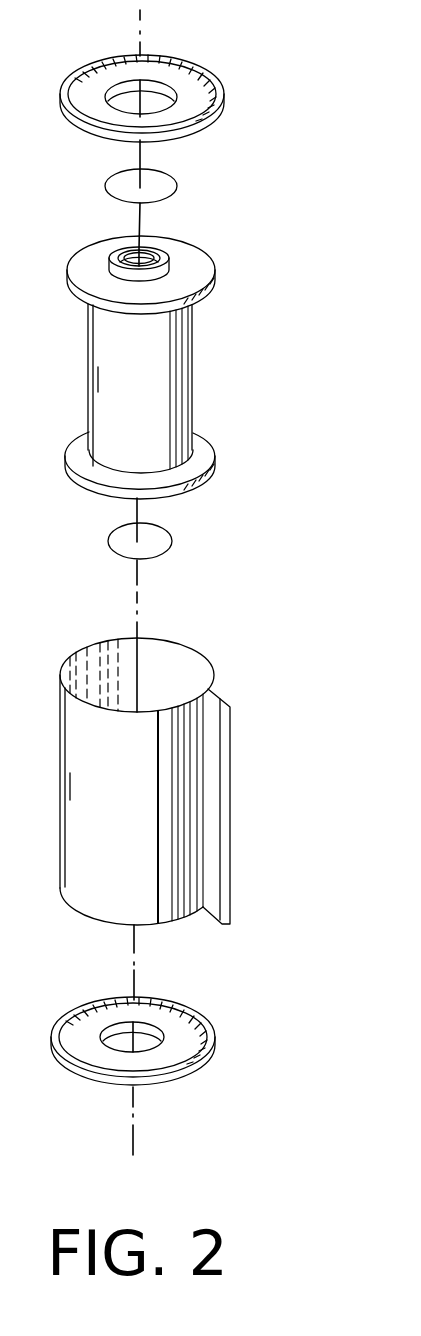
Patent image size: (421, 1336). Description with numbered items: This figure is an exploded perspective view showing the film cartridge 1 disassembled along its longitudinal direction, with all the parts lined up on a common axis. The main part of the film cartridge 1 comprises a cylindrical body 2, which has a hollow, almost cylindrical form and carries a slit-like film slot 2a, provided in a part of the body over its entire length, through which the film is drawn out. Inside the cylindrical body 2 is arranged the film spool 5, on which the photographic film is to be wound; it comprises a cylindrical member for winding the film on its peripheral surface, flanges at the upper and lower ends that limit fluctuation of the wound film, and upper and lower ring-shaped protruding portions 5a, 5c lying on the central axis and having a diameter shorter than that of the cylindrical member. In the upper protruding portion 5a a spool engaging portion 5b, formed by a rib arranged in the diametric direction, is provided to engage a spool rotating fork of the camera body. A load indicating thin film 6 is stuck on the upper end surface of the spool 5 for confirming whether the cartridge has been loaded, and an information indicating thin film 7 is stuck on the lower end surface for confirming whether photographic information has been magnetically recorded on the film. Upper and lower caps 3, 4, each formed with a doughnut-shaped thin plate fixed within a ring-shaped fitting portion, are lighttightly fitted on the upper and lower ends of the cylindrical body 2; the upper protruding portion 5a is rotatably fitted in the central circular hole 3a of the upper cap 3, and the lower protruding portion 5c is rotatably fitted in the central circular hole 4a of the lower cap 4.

The film cartridge 1 is at (181, 582).
The cylindrical body 2 is at (156, 781).
The film slot 2a is at (227, 782).
The upper cap 3 is at (156, 81).
The central circular hole 3a is at (118, 96).
The lower cap 4 is at (144, 1021).
The central circular hole 4a is at (118, 1036).
The film spool 5 is at (134, 368).
The upper ring-shaped protruding portion 5a is at (134, 241).
The spool engaging portion 5b is at (128, 249).
The lower ring-shaped protruding portion 5c is at (128, 497).
The load indicating thin film 6 is at (159, 188).
The information indicating thin film 7 is at (177, 520).